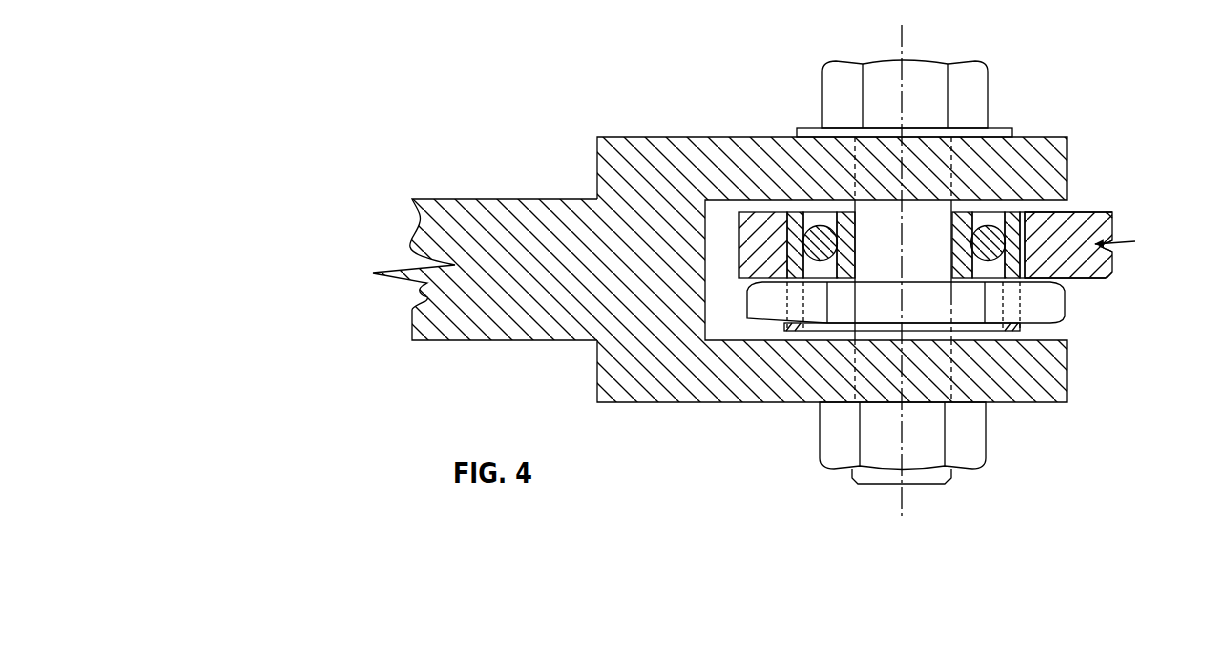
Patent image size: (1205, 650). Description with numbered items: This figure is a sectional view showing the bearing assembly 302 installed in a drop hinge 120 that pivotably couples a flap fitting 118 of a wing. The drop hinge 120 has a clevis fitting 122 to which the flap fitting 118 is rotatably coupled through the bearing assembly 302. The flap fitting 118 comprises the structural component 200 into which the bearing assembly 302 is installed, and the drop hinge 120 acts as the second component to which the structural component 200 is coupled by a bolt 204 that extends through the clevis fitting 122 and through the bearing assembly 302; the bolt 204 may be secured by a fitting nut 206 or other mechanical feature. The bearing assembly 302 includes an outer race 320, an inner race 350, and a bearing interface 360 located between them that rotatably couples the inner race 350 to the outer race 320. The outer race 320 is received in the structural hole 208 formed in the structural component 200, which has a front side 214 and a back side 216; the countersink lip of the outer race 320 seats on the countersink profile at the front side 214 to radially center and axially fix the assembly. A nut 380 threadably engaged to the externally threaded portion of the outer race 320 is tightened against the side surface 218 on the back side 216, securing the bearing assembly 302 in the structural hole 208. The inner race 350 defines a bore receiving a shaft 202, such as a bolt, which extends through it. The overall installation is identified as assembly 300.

The flap fitting 118 is at (1113, 263).
The drop hinge 120 is at (477, 199).
The clevis fitting 122 is at (632, 137).
The structural component 200 is at (1113, 226).
The shaft 202 is at (868, 61).
The bolt 204 is at (951, 61).
The fitting nut 206 is at (986, 437).
The structural hole 208 is at (1065, 303).
The front side 214 is at (1073, 213).
The back side 216 is at (1088, 279).
The side surface 218 is at (1098, 213).
The bearing assembly 300 is at (1099, 78).
The bearing assembly 302 is at (995, 209).
The outer race 320 is at (787, 228).
The inner race 350 is at (773, 171).
The bearing interface 360 is at (838, 222).
The nut 380 is at (1066, 327).